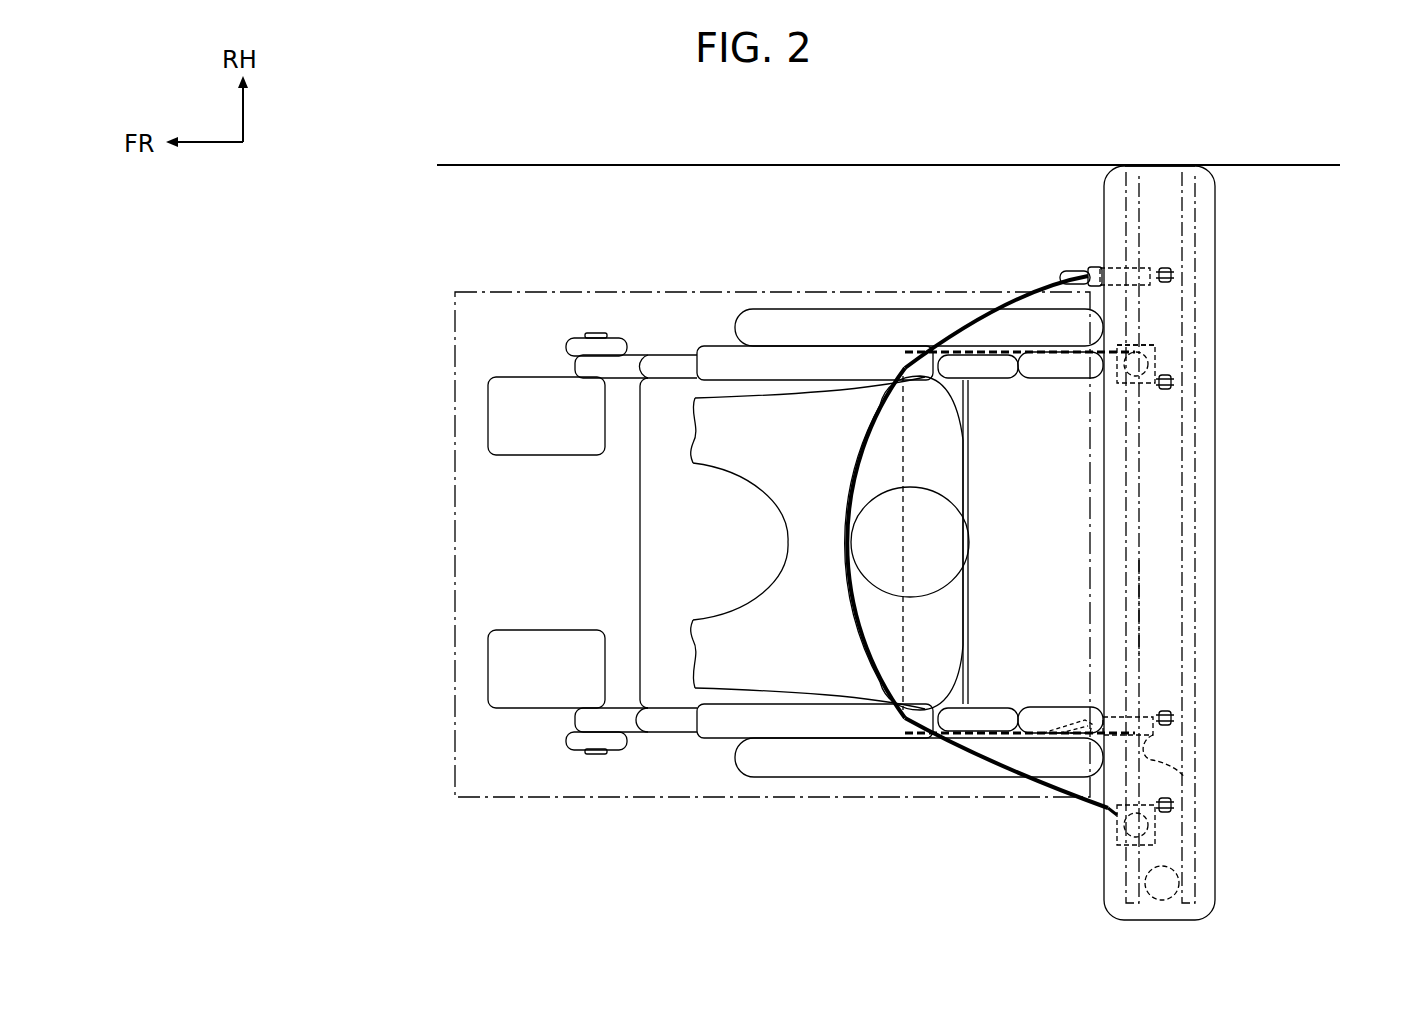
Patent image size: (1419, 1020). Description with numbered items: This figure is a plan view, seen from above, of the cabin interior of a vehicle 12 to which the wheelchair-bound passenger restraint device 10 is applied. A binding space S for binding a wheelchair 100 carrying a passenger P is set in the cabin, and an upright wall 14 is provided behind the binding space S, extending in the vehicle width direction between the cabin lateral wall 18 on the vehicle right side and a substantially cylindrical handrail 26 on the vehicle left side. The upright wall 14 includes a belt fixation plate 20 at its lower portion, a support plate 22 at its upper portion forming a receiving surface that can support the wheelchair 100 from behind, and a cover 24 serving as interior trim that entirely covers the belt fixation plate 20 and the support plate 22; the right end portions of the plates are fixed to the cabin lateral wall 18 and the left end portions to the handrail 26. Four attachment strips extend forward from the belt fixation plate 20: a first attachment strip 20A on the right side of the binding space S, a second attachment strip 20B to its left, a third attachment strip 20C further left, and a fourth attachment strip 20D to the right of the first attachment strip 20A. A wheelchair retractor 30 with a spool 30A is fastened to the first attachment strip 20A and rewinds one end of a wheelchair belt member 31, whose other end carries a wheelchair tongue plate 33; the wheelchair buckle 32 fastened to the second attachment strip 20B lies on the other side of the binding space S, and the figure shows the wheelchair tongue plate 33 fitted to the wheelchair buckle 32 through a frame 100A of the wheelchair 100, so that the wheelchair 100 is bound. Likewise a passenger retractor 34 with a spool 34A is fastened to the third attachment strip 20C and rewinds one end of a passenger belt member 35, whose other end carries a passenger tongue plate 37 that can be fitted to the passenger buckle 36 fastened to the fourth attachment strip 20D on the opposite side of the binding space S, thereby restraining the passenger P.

The wheelchair-bound passenger restraint device 10 is at (1177, 543).
The vehicle 12 is at (962, 188).
The upright wall 14 is at (1222, 530).
The cabin lateral wall 18 is at (605, 167).
The belt fixation plate 20 is at (1208, 436).
The first attachment strip 20A is at (1176, 381).
The second attachment strip 20B is at (1180, 718).
The third attachment strip 20C is at (1176, 805).
The fourth attachment strip 20D is at (1172, 268).
The support plate 22 is at (1145, 608).
The cover 24 is at (1216, 188).
The handrail 26 is at (1200, 870).
The wheelchair retractor 30 is at (1165, 352).
The spool 30A is at (1150, 334).
The wheelchair belt member 31 is at (985, 716).
The wheelchair buckle 32 is at (1124, 752).
The wheelchair tongue plate 33 is at (1088, 716).
The passenger retractor 34 is at (1102, 846).
The spool 34A is at (1102, 823).
The passenger belt member 35 is at (1020, 346).
The passenger buckle 36 is at (1093, 268).
The passenger tongue plate 37 is at (1064, 275).
The wheelchair 100 is at (795, 488).
The frame 100A is at (993, 380).
The passenger P is at (970, 541).
The binding space S is at (688, 290).